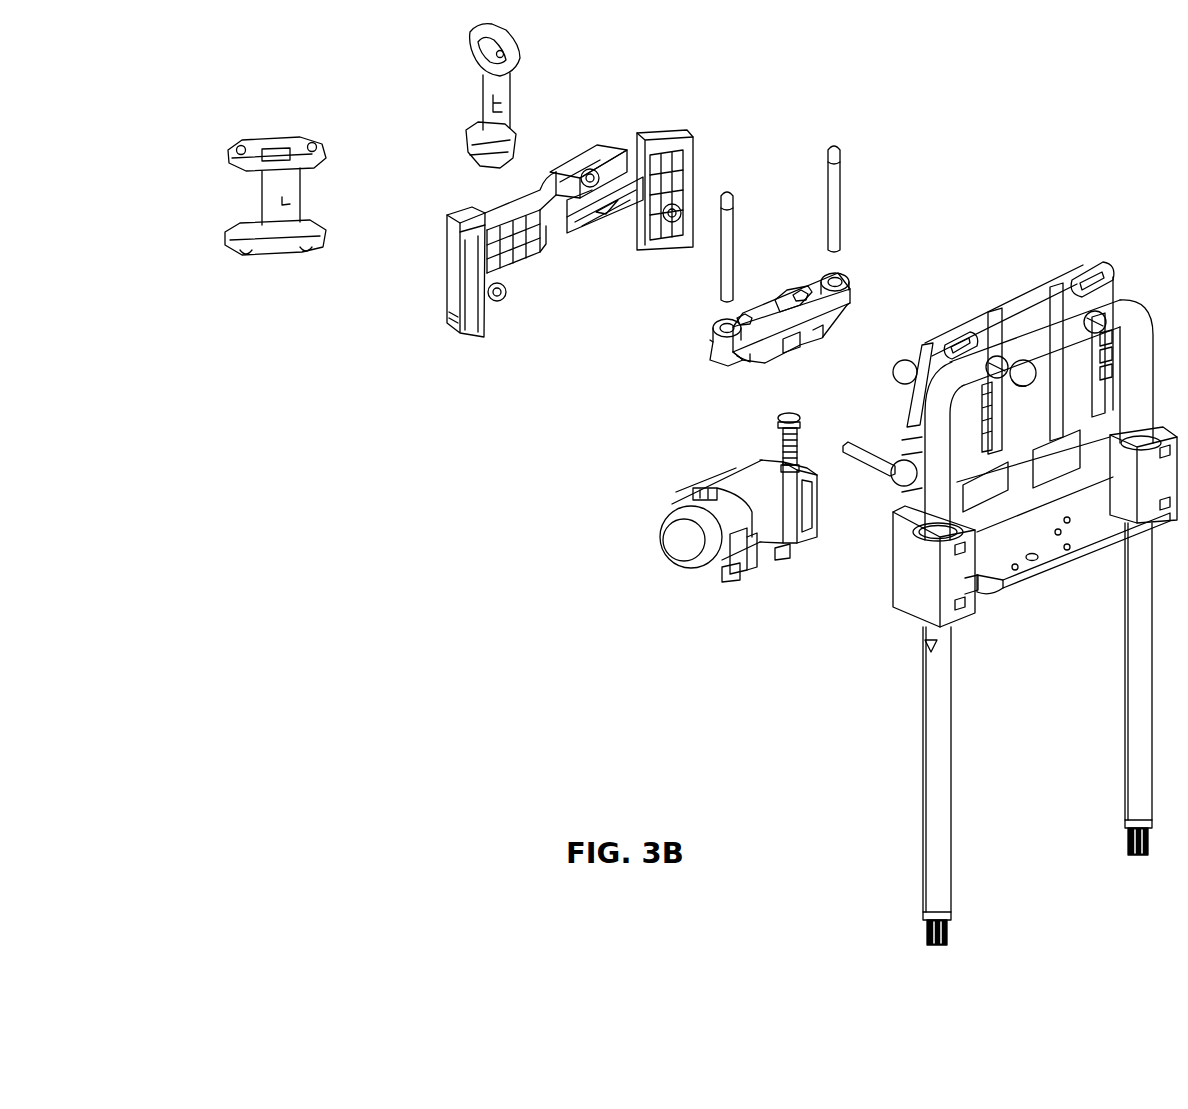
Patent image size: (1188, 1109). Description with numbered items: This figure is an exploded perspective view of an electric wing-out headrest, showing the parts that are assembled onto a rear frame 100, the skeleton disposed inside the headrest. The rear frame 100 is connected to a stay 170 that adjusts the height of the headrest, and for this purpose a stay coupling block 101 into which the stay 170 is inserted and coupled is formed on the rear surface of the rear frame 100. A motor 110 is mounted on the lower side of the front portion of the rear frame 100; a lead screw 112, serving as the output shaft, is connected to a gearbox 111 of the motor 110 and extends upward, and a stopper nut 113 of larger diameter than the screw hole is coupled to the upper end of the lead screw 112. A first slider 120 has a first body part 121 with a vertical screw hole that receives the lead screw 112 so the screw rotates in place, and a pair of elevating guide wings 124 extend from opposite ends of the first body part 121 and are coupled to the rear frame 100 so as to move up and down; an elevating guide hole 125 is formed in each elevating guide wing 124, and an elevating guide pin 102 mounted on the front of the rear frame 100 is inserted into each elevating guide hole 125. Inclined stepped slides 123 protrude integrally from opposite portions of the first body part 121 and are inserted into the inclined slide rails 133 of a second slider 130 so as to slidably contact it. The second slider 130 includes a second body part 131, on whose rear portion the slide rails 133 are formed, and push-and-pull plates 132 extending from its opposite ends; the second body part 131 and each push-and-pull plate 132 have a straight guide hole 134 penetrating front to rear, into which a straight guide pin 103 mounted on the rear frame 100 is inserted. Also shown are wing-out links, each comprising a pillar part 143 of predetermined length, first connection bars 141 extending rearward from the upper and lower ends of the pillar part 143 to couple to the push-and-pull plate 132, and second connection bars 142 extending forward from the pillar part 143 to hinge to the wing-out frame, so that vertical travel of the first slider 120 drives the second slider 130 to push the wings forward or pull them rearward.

The rear frame 100 is at (1005, 581).
The stay coupling block 101 is at (920, 606).
The elevating guide pin 102 is at (735, 226).
The straight guide pin 103 is at (890, 464).
The motor 110 is at (770, 472).
The gearbox 111 is at (812, 516).
The lead screw 112 is at (822, 417).
The stopper nut 113 is at (797, 414).
The first slider 120 is at (780, 327).
The first body part 121 is at (775, 314).
The inclined stepped slide 123 is at (288, 192).
The elevating guide wing 124 is at (723, 354).
The elevating guide hole 125 is at (714, 328).
The second slider 130 is at (577, 195).
The second body part 131 is at (600, 152).
The push-and-pull plate 132 is at (462, 290).
The slide rail 133 is at (632, 216).
The straight guide hole 134 is at (674, 206).
The first connection bar 141 is at (366, 139).
The second connection bar 142 is at (212, 252).
The pillar part 143 is at (487, 92).
The stay 170 is at (923, 720).